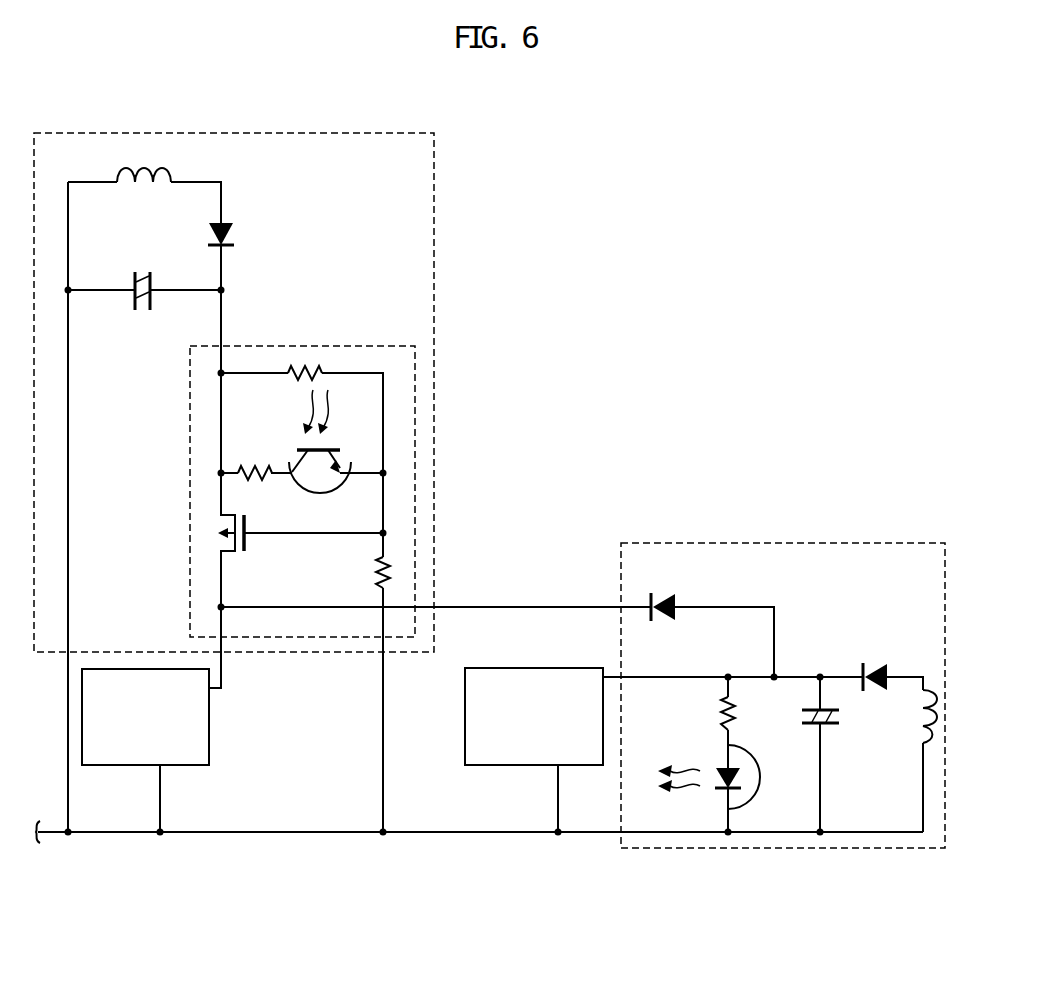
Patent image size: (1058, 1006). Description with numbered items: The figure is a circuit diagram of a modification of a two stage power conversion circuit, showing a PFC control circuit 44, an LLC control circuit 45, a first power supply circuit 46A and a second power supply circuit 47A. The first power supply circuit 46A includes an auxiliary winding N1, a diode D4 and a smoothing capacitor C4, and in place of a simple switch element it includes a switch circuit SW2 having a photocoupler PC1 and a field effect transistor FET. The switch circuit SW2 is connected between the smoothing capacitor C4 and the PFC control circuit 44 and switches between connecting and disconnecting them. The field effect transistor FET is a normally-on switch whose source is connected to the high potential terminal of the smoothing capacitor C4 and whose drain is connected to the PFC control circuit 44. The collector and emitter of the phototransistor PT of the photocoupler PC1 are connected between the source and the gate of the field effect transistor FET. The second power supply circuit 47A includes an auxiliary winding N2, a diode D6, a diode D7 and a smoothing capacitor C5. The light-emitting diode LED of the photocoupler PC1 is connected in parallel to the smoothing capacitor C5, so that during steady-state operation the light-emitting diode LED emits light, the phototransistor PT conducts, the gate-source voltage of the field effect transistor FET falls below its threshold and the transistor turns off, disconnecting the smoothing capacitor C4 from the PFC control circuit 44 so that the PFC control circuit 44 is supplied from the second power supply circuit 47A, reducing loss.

The first power supply circuit 46A is at (437, 293).
The switch circuit SW2 is at (415, 388).
The second power supply circuit 47A is at (843, 543).
The auxiliary winding N1 is at (145, 181).
The diode D4 is at (228, 223).
The smoothing capacitor C4 is at (146, 271).
The phototransistor PT is at (297, 446).
The photocoupler PC1 is at (327, 494).
The field effect transistor FET is at (248, 529).
The PFC control circuit 44 is at (144, 668).
The LLC control circuit 45 is at (464, 712).
The diode D7 is at (667, 622).
The diode D6 is at (876, 664).
The light-emitting diode LED is at (719, 762).
The smoothing capacitor C5 is at (825, 726).
The auxiliary winding N2 is at (922, 716).